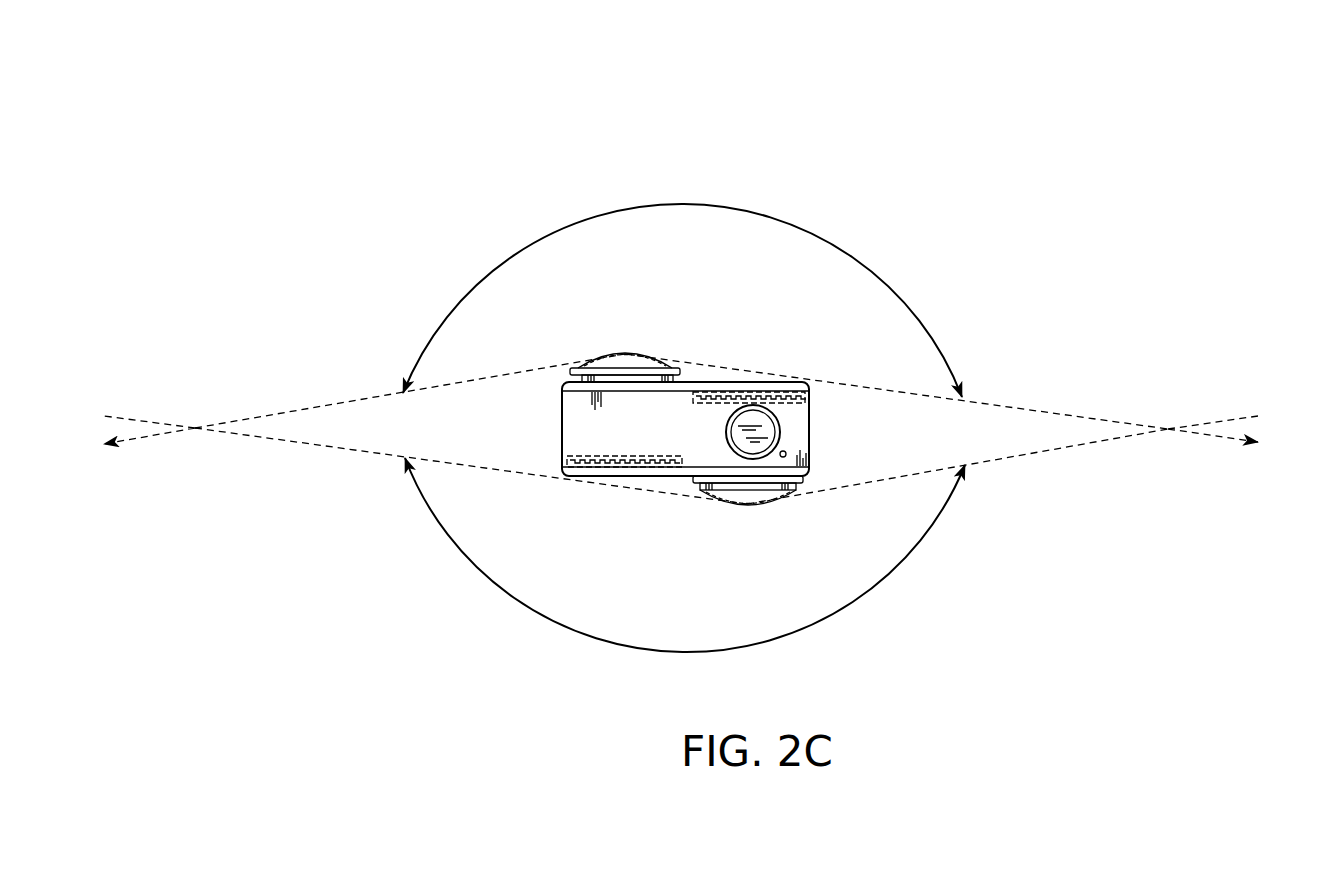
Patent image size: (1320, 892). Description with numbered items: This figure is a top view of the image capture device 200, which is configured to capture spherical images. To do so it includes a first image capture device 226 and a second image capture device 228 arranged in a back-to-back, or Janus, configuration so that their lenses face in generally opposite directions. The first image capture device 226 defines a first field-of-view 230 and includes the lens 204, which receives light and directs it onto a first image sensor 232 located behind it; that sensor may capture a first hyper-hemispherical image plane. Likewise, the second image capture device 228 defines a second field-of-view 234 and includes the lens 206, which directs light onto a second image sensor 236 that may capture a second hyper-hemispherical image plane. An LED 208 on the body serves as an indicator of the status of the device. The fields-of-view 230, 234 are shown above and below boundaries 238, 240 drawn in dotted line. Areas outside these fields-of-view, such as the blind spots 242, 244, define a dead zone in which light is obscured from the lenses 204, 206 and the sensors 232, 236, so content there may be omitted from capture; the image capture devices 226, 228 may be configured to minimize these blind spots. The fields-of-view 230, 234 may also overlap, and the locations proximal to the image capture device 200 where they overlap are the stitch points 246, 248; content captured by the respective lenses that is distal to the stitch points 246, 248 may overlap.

The image capture device 200 is at (1180, 160).
The lens 204 is at (650, 362).
The lens 206 is at (722, 497).
The LED 208 is at (783, 458).
The first image capture device 226 is at (620, 350).
The second image capture device 228 is at (758, 508).
The first field-of-view 230 is at (800, 224).
The first image sensor 232 is at (598, 464).
The second field-of-view 234 is at (617, 646).
The second image sensor 236 is at (775, 395).
The boundary 238 is at (1118, 420).
The boundary 240 is at (1080, 448).
The blind spot 242 is at (480, 442).
The blind spot 244 is at (873, 449).
The stitch point 246 is at (195, 430).
The stitch point 248 is at (1170, 432).